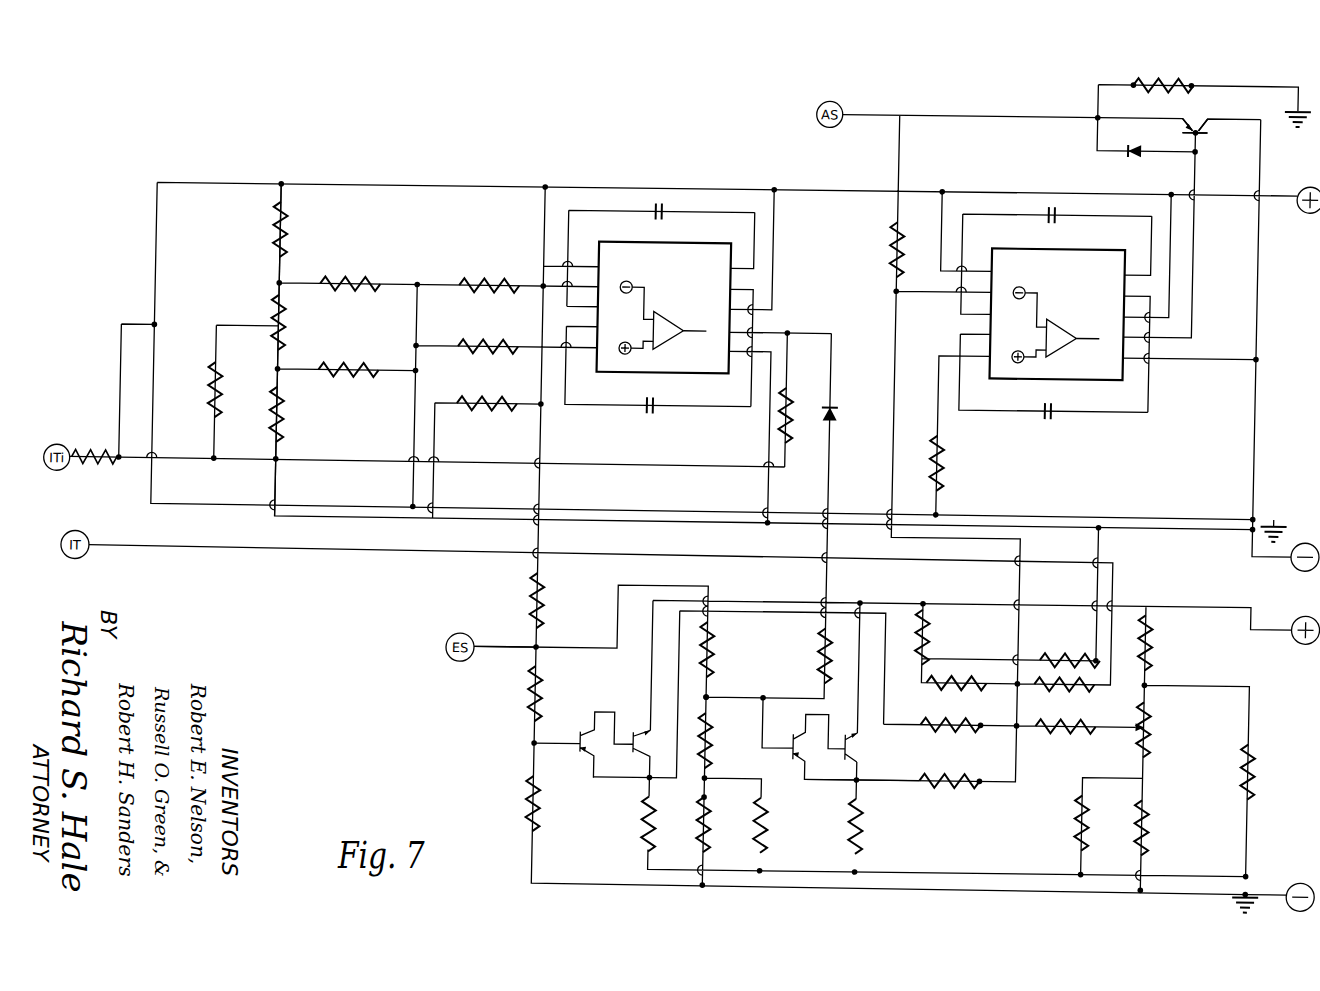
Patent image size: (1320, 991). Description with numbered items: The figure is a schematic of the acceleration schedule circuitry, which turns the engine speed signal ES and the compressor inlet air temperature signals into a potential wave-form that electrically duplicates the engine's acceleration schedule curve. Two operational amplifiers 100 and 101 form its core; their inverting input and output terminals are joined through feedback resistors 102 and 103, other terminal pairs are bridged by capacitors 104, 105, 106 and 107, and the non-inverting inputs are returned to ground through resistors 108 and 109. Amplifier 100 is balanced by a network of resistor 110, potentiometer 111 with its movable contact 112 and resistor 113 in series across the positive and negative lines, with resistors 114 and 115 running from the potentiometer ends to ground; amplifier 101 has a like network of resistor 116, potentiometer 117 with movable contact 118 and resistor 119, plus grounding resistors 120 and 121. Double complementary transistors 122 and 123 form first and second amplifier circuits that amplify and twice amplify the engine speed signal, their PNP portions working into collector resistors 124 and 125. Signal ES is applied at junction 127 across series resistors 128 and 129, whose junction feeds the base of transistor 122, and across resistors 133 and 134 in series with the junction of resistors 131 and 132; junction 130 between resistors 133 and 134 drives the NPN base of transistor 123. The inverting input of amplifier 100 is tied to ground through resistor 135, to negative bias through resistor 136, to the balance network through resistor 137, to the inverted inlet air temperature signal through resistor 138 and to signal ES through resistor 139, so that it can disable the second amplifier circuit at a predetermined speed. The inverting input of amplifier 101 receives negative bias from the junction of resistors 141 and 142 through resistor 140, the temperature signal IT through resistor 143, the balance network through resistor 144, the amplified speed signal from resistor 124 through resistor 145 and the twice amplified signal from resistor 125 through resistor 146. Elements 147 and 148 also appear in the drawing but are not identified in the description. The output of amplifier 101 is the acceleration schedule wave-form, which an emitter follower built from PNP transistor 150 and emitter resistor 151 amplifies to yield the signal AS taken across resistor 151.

The operational amplifier 100 is at (664, 258).
The operational amplifier 101 is at (1048, 268).
The feedback resistor 102 is at (788, 448).
The feedback resistor 103 is at (888, 263).
The capacitor 104 is at (644, 211).
The capacitor 105 is at (1052, 211).
The capacitor 106 is at (636, 410).
The capacitor 107 is at (1056, 414).
The resistor 108 is at (478, 348).
The resistor 109 is at (941, 472).
The resistor 110 is at (272, 233).
The potentiometer 111 is at (278, 324).
The movable contact 112 is at (272, 331).
The resistor 113 is at (280, 432).
The resistor 114 is at (360, 284).
The resistor 115 is at (352, 378).
The resistor 116 is at (1150, 635).
The potentiometer 117 is at (1154, 742).
The movable contact 118 is at (1146, 726).
The resistor 119 is at (1152, 830).
The resistor 120 is at (1257, 774).
The resistor 121 is at (1086, 820).
The double complementary transistor 122 is at (608, 765).
The double complementary transistor 123 is at (836, 758).
The collector resistor 124 is at (652, 844).
The collector resistor 125 is at (866, 846).
The junction 127 is at (542, 650).
The resistor 128 is at (537, 695).
The resistor 129 is at (537, 801).
The junction 130 is at (715, 696).
The resistor 131 is at (713, 818).
The resistor 132 is at (772, 834).
The resistor 133 is at (715, 654).
The resistor 134 is at (713, 759).
The resistor 135 is at (487, 284).
The resistor 136 is at (479, 405).
The resistor 137 is at (212, 372).
The resistor 138 is at (90, 466).
The resistor 139 is at (537, 598).
The resistor 140 is at (952, 682).
The resistor 141 is at (930, 621).
The resistor 142 is at (1068, 656).
The resistor 143 is at (1068, 680).
The resistor 144 is at (1060, 724).
The resistor 145 is at (948, 724).
The resistor 146 is at (950, 780).
The diode 147 is at (828, 404).
The resistor 148 is at (826, 664).
The PNP transistor 150 is at (1188, 126).
The emitter resistor 151 is at (1134, 80).